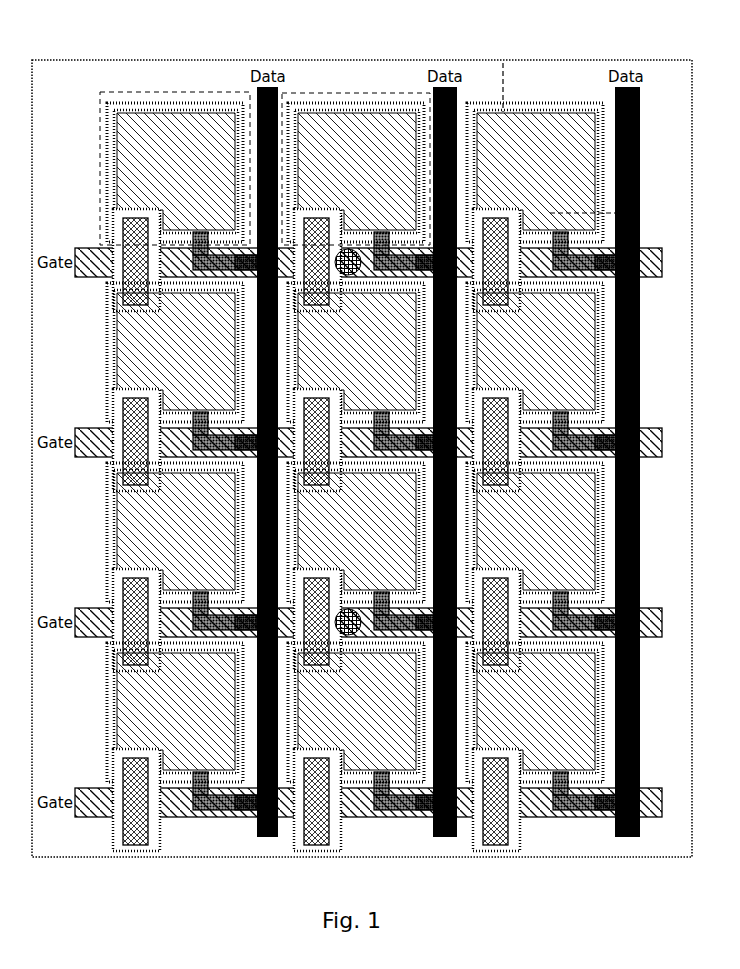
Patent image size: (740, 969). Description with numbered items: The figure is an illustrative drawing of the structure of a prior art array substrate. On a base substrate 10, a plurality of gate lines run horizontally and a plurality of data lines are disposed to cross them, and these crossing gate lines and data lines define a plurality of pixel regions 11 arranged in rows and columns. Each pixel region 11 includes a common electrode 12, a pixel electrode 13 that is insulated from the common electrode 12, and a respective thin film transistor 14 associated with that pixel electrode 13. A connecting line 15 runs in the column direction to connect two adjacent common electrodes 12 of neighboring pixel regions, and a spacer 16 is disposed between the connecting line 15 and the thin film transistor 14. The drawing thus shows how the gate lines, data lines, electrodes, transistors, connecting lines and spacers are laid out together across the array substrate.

The base substrate 10 is at (167, 63).
The pixel region 11 is at (100, 110).
The common electrode 12 is at (205, 113).
The pixel electrode 13 is at (135, 115).
The thin film transistor 14 is at (503, 63).
The connecting line 15 is at (120, 287).
The spacer 16 is at (352, 272).